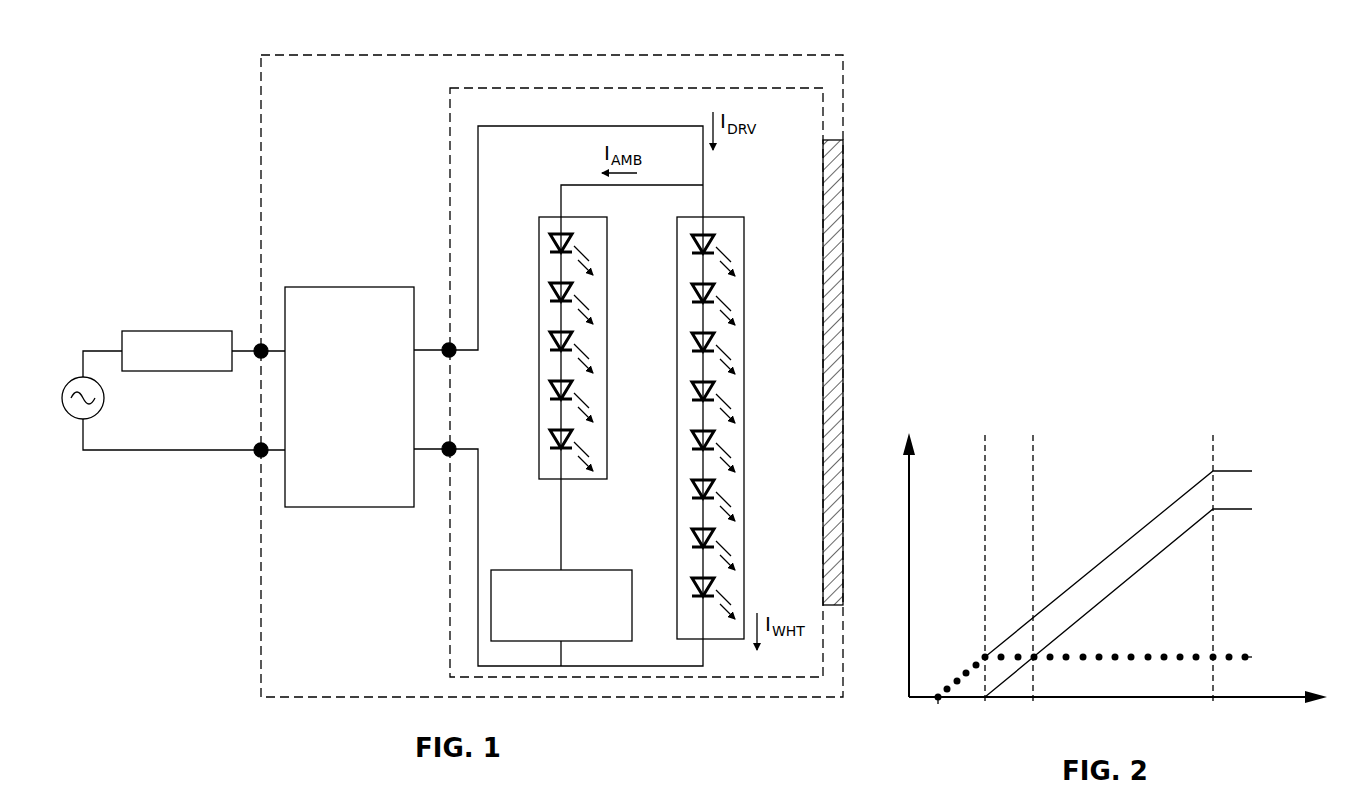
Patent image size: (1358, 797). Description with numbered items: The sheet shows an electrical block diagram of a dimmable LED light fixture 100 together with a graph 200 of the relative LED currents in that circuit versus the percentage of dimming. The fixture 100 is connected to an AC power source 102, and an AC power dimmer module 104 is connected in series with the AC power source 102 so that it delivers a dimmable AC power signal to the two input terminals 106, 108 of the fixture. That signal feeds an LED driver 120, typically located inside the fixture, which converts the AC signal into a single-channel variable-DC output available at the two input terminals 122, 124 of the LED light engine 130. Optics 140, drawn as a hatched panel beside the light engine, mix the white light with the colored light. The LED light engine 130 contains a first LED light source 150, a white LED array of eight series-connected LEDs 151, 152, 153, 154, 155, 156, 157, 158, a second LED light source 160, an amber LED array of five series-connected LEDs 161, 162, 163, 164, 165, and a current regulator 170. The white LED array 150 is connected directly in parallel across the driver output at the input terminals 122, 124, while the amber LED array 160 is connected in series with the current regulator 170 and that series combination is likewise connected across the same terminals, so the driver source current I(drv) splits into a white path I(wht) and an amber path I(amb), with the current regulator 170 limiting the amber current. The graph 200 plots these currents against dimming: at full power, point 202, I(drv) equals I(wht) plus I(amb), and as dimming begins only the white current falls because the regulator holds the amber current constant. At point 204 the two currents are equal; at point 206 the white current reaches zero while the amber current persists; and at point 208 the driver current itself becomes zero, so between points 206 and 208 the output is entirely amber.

In FIG. 1, the dimmable LED light fixture 100 is at (260, 98).
In FIG. 1, the AC power source 102 is at (98, 411).
In FIG. 1, the AC power dimmer module 104 is at (135, 331).
In FIG. 1, the input terminal 106 is at (256, 358).
In FIG. 1, the input terminal 108 is at (256, 446).
In FIG. 1, the LED driver 120 is at (358, 287).
In FIG. 1, the input terminal 122 is at (455, 356).
In FIG. 1, the input terminal 124 is at (455, 444).
In FIG. 1, the LED light engine 130 is at (450, 105).
In FIG. 1, the optics 140 is at (836, 180).
In FIG. 1, the first LED light source 150 is at (741, 217).
In FIG. 1, the LED 151 is at (718, 242).
In FIG. 1, the LED 152 is at (718, 291).
In FIG. 1, the LED 153 is at (718, 340).
In FIG. 1, the LED 154 is at (718, 389).
In FIG. 1, the LED 155 is at (718, 438).
In FIG. 1, the LED 156 is at (718, 487).
In FIG. 1, the LED 157 is at (718, 536).
In FIG. 1, the LED 158 is at (718, 585).
In FIG. 1, the second LED light source 160 is at (603, 217).
In FIG. 1, the LED 161 is at (576, 241).
In FIG. 1, the LED 162 is at (576, 290).
In FIG. 1, the LED 163 is at (576, 339).
In FIG. 1, the LED 164 is at (576, 388).
In FIG. 1, the LED 165 is at (576, 437).
In FIG. 1, the current regulator 170 is at (595, 570).
In FIG. 2, the graph 200 is at (972, 494).
In FIG. 2, the point 202 is at (1213, 583).
In FIG. 2, the point 204 is at (1033, 583).
In FIG. 2, the point 206 is at (985, 583).
In FIG. 2, the point 208 is at (938, 714).